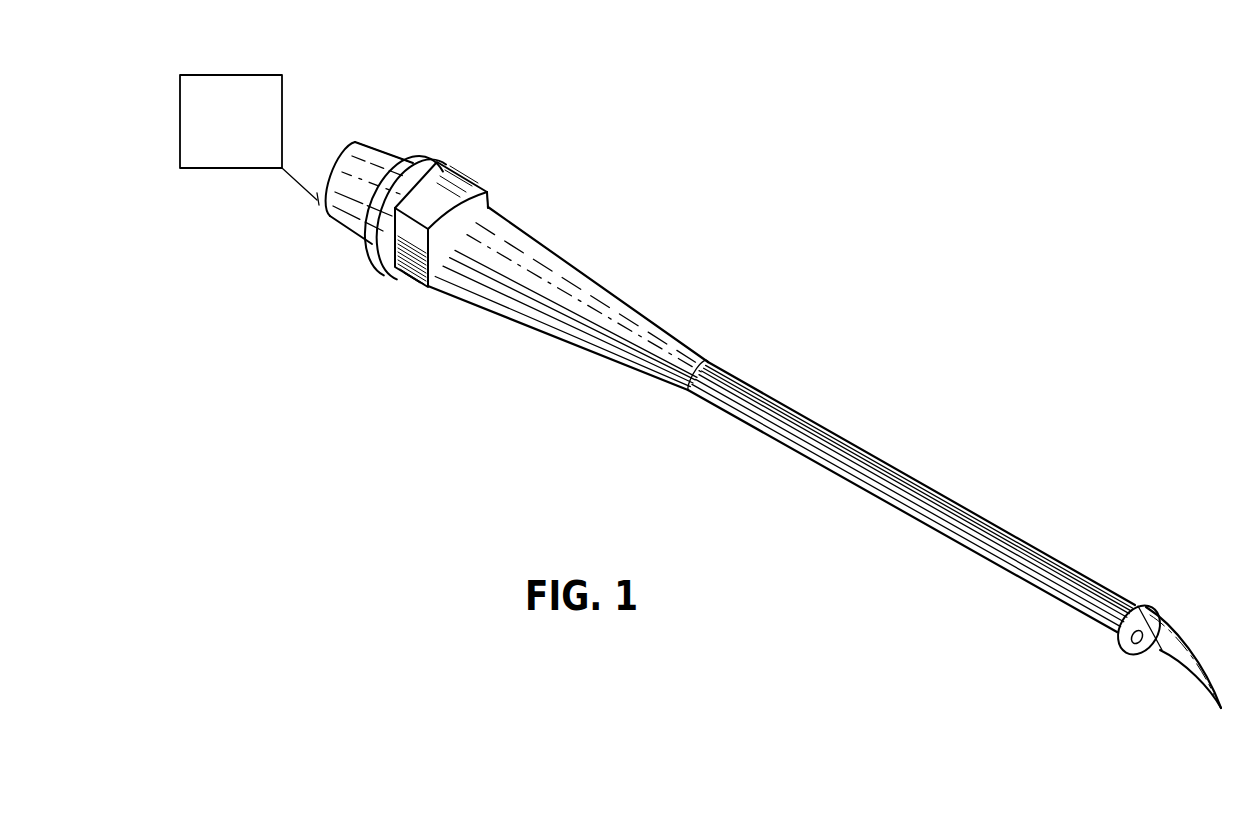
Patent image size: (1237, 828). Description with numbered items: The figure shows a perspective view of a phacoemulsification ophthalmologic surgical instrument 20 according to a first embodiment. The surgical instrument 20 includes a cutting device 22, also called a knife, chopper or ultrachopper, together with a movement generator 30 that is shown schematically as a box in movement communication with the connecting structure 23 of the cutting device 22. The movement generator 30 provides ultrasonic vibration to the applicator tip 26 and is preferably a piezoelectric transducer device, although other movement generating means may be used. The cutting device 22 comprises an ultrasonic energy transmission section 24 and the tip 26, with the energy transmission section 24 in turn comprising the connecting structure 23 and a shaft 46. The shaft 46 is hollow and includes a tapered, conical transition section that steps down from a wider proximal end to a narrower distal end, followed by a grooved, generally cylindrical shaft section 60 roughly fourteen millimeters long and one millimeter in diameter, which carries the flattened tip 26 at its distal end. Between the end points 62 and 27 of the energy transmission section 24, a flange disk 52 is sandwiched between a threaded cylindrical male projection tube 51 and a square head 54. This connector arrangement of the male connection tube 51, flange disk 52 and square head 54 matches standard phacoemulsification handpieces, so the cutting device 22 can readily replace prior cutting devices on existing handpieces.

The surgical instrument 20 is at (622, 150).
The cutting device 22 is at (597, 277).
The connecting structure 23 is at (394, 146).
The ultrasonic energy transmission section 24 is at (589, 357).
The tip 26 is at (1174, 656).
The end point 27 is at (1113, 626).
The movement generator 30 is at (207, 170).
The shaft 46 is at (817, 405).
The threaded cylindrical male projection tube 51 is at (338, 223).
The flange disk 52 is at (443, 160).
The square head 54 is at (470, 182).
The grooved cylindrical shaft section 60 is at (910, 470).
The end point 62 is at (313, 200).